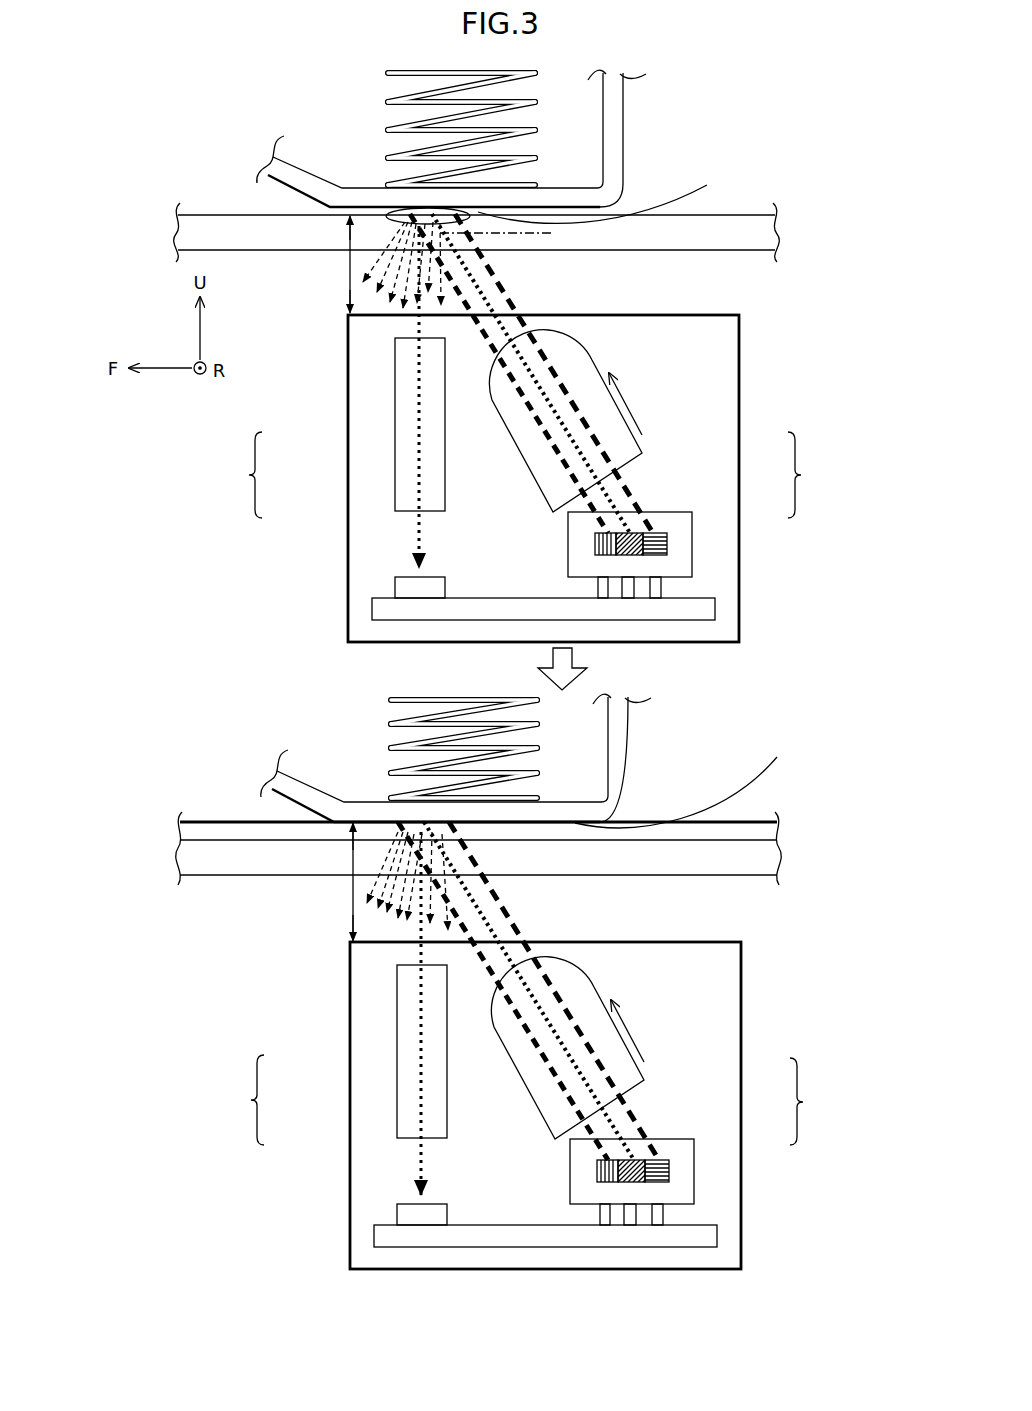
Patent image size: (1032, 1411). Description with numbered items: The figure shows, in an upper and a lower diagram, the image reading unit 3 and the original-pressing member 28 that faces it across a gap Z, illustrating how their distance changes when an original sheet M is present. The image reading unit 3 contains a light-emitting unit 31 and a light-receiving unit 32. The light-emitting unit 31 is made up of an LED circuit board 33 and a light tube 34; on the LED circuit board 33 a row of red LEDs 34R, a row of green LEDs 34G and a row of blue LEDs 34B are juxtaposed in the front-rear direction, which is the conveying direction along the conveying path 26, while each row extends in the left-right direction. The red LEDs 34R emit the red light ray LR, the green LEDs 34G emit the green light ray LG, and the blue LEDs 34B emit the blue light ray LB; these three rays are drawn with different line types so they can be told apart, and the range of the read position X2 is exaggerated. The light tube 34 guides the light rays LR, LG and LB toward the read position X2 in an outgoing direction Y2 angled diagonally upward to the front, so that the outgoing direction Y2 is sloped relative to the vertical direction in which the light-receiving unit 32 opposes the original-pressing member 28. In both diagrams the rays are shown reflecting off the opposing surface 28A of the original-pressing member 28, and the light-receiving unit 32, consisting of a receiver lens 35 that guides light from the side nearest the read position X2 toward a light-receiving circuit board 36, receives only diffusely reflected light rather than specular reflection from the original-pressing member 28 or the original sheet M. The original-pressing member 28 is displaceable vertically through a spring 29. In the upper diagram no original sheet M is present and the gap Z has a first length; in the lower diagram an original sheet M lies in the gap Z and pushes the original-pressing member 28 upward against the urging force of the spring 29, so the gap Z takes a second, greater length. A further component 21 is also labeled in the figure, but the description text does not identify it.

The image reading unit 3 is at (740, 345).
The platen 21 is at (697, 226).
The conveying path 26 is at (560, 205).
The original-pressing member 28 is at (625, 134).
The opposing surface 28A is at (643, 492).
The spring 29 is at (385, 72).
The light-emitting unit 31 is at (811, 788).
The light-receiving unit 32 is at (240, 788).
The LED circuit board 33 is at (681, 540).
The light tube 34 is at (656, 799).
The red LEDs 34R is at (600, 546).
The green LEDs 34G is at (625, 556).
The blue LEDs 34B is at (650, 553).
The receiver lens 35 is at (398, 438).
The light-receiving circuit board 36 is at (398, 592).
The original sheet M is at (230, 828).
The red light ray LR is at (395, 222).
The green light ray LG is at (405, 212).
The blue light ray LB is at (418, 212).
The read position X2 is at (511, 237).
The outgoing direction Y2 is at (644, 397).
The gap Z is at (350, 270).